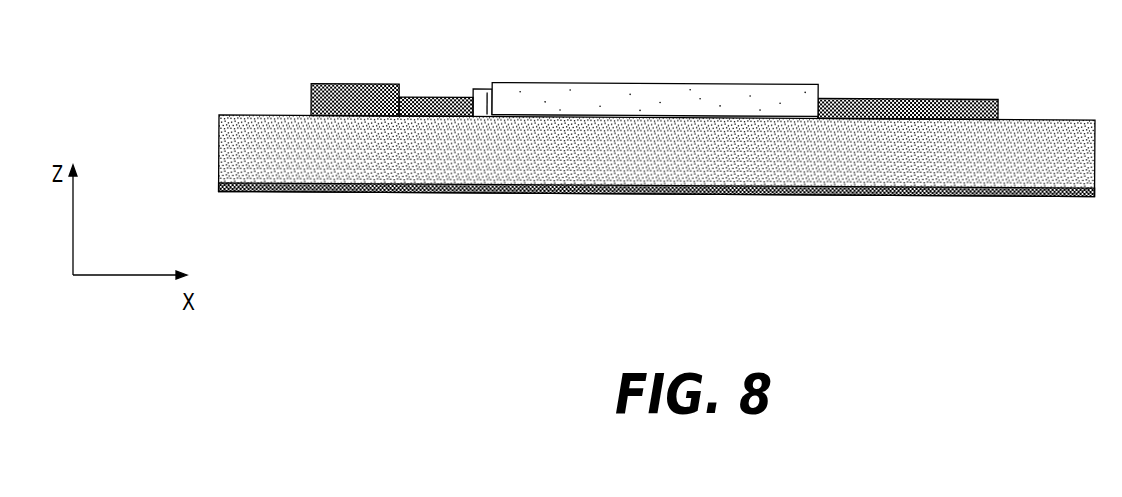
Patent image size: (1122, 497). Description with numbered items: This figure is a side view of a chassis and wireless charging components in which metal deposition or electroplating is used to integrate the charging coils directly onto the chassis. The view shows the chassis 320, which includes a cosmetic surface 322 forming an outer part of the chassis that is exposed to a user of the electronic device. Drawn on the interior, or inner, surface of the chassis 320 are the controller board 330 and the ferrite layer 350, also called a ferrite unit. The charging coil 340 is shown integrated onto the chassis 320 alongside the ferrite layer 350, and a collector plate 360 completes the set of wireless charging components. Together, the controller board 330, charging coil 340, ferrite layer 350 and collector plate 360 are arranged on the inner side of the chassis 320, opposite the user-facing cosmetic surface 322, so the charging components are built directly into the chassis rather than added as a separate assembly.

The chassis 320 is at (288, 160).
The cosmetic surface 322 is at (958, 200).
The controller board 330 is at (421, 99).
The charging coil 340 is at (753, 117).
The ferrite layer 350 is at (668, 86).
The collector plate 360 is at (382, 113).